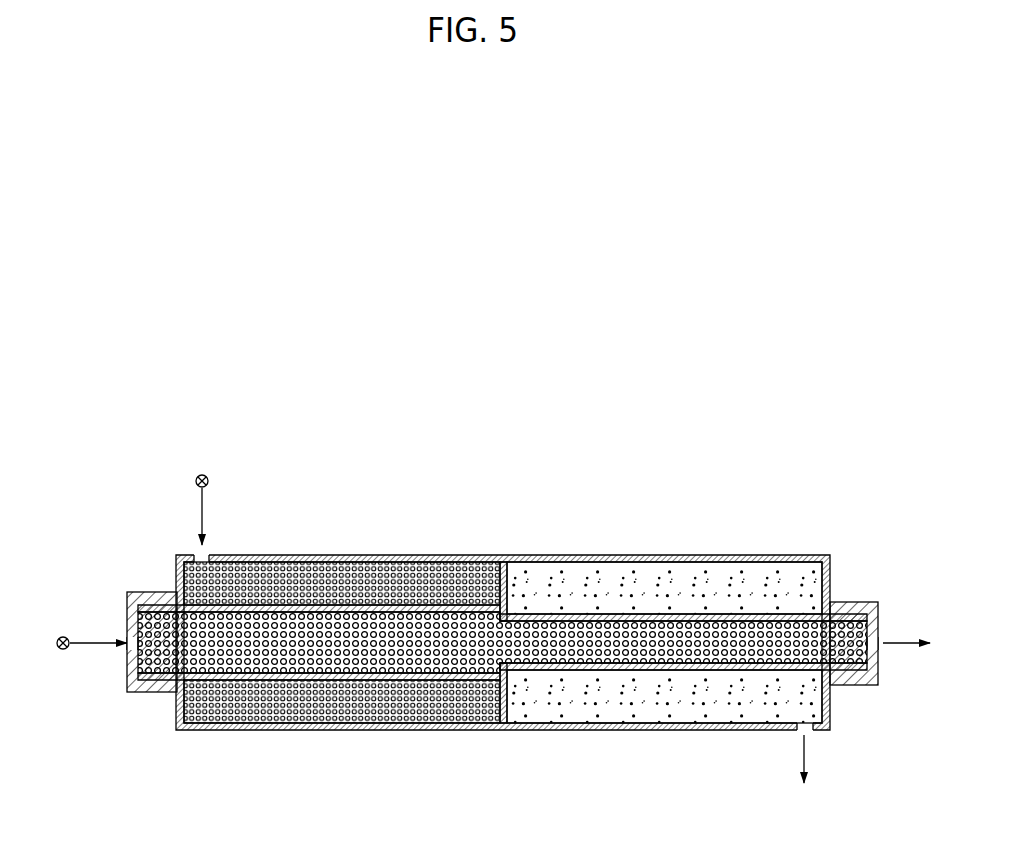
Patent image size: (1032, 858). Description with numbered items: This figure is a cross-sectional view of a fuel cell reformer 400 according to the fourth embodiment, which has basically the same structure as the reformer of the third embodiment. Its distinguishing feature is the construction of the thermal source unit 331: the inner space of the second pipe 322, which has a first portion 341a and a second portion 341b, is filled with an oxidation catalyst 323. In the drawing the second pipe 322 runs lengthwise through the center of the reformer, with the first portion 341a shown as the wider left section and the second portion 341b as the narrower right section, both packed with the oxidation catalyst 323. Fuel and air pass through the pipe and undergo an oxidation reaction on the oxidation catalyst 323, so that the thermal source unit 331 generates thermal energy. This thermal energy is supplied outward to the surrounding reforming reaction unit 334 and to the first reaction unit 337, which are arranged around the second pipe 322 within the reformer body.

The fuel cell reformer 400 is at (468, 537).
The thermal source unit 331 is at (117, 656).
The second pipe 322 is at (550, 798).
The first portion 341a is at (452, 731).
The second portion 341b is at (537, 670).
The reforming reaction unit 334 is at (296, 753).
The first reaction unit 337 is at (709, 753).
The oxidation catalyst 323 is at (633, 670).